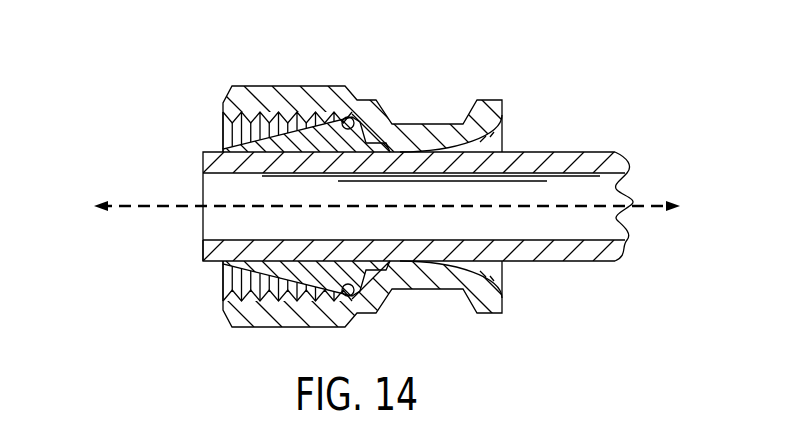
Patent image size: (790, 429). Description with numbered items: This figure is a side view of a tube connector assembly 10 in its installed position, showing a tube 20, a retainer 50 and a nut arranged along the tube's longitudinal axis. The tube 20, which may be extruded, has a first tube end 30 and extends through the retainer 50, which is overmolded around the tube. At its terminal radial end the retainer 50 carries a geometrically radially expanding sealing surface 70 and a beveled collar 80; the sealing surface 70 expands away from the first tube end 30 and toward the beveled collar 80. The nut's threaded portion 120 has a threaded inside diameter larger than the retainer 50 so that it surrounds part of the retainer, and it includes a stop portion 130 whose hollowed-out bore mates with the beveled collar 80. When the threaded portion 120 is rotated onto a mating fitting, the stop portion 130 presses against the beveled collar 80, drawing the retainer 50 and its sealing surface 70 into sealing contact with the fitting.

The tube connector assembly 10 is at (180, 71).
The tube 20 is at (592, 152).
The first tube end 30 is at (192, 252).
The retainer 50 is at (250, 150).
The sealing surface 70 is at (270, 130).
The beveled collar 80 is at (368, 174).
The threaded portion 120 is at (240, 127).
The stop portion 130 is at (349, 117).